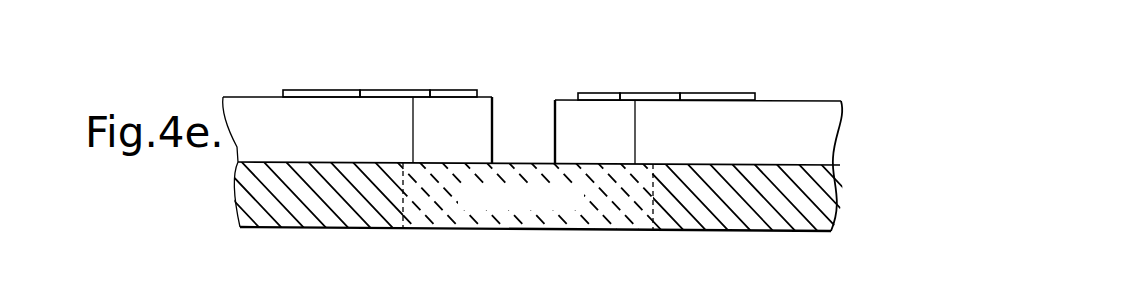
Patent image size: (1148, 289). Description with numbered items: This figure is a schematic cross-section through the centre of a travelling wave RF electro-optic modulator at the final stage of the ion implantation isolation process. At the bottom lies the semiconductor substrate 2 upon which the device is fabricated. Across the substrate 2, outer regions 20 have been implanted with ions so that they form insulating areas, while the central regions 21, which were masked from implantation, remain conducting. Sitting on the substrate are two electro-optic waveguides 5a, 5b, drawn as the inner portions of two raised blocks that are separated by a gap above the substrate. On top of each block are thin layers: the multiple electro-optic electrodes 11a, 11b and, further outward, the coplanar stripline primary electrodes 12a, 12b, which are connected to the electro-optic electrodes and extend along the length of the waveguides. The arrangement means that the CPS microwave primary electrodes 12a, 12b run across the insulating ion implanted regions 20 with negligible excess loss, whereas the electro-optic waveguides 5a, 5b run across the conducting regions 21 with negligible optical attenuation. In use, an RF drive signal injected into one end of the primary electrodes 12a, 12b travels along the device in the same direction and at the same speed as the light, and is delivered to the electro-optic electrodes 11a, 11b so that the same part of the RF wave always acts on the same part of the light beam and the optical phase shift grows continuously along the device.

The substrate 2 is at (773, 218).
The ion implanted regions 20 is at (298, 228).
The conducting regions 21 is at (627, 220).
The electro-optic waveguide 5a is at (473, 120).
The electro-optic waveguide 5b is at (573, 127).
The electro-optic electrode 11a is at (450, 90).
The electro-optic electrode 11b is at (598, 93).
The coplanar stripline primary electrode 12a is at (295, 92).
The coplanar stripline primary electrode 12b is at (755, 100).